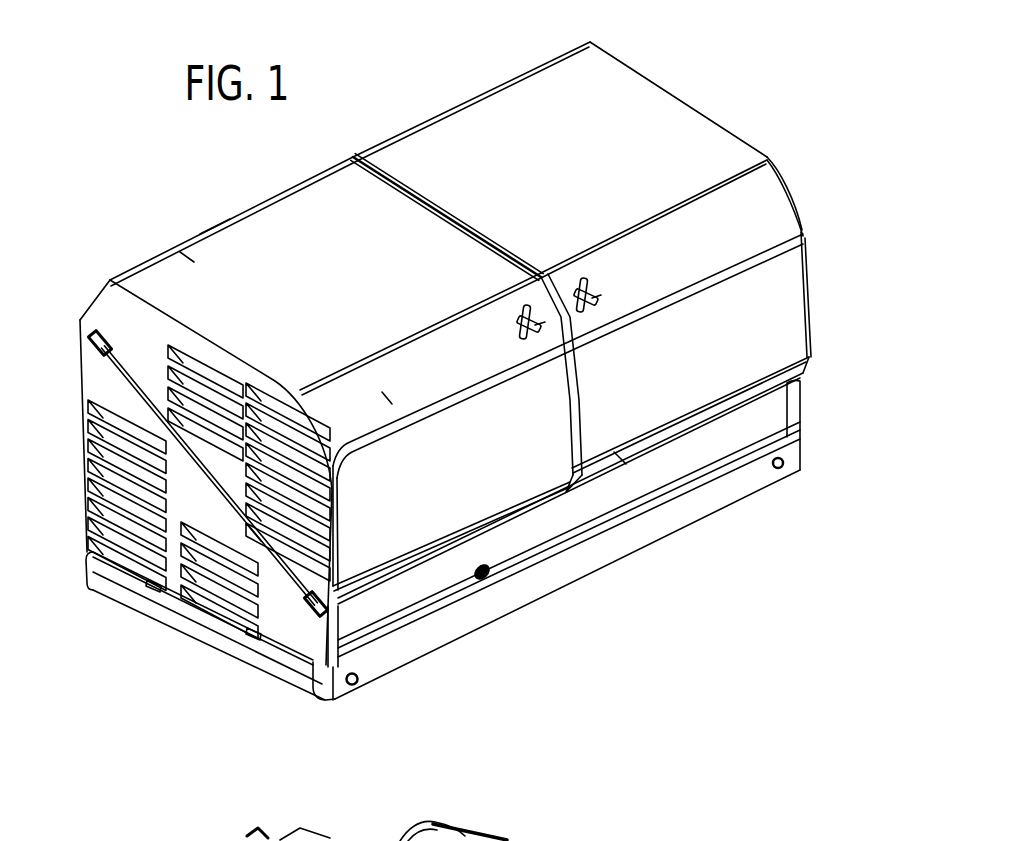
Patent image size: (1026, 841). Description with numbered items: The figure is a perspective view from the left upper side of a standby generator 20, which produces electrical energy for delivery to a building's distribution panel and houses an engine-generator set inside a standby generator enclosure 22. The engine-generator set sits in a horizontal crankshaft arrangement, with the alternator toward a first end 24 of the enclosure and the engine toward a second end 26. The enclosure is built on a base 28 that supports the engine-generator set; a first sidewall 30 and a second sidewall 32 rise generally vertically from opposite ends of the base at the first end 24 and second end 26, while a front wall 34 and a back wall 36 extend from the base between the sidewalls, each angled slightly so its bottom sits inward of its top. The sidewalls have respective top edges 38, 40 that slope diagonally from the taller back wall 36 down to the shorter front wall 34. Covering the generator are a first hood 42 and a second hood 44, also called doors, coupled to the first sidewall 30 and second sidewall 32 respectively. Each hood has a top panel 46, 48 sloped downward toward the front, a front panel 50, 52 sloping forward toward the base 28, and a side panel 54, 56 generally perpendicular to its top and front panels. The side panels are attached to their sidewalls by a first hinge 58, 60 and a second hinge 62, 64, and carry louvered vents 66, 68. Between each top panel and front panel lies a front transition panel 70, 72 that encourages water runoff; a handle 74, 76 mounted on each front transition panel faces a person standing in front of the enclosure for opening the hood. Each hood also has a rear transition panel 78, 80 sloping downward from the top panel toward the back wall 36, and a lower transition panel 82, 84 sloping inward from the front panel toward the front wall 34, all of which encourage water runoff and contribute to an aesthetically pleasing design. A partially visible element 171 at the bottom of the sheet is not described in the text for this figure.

The standby generator 20 is at (746, 33).
The standby generator enclosure 22 is at (683, 84).
The first end 24 is at (815, 410).
The second end 26 is at (186, 669).
The base 28 is at (590, 556).
The first sidewall 30 is at (818, 377).
The second sidewall 32 is at (280, 630).
The front wall 34 is at (728, 440).
The back wall 36 is at (70, 402).
The top edge 38 is at (815, 222).
The top edge 40 is at (226, 470).
The first hood 42 is at (547, 169).
The second hood 44 is at (309, 293).
The top panel 46 is at (692, 140).
The top panel 48 is at (187, 257).
The front panel 50 is at (782, 308).
The front panel 52 is at (363, 557).
The side panel 54 is at (796, 164).
The side panel 56 is at (115, 307).
The first hinge 58 is at (643, 40).
The first hinge 60 is at (84, 340).
The second hinge 62 is at (828, 337).
The second hinge 64 is at (293, 630).
The vent 66 is at (781, 144).
The vent 68 is at (198, 413).
The front transition panel 70 is at (773, 212).
The front transition panel 72 is at (388, 398).
The handle 74 is at (600, 290).
The handle 76 is at (520, 327).
The rear transition panel 78 is at (404, 114).
The rear transition panel 80 is at (195, 218).
The lower transition panel 82 is at (620, 458).
The lower transition panel 84 is at (500, 522).
The component 171 is at (626, 832).